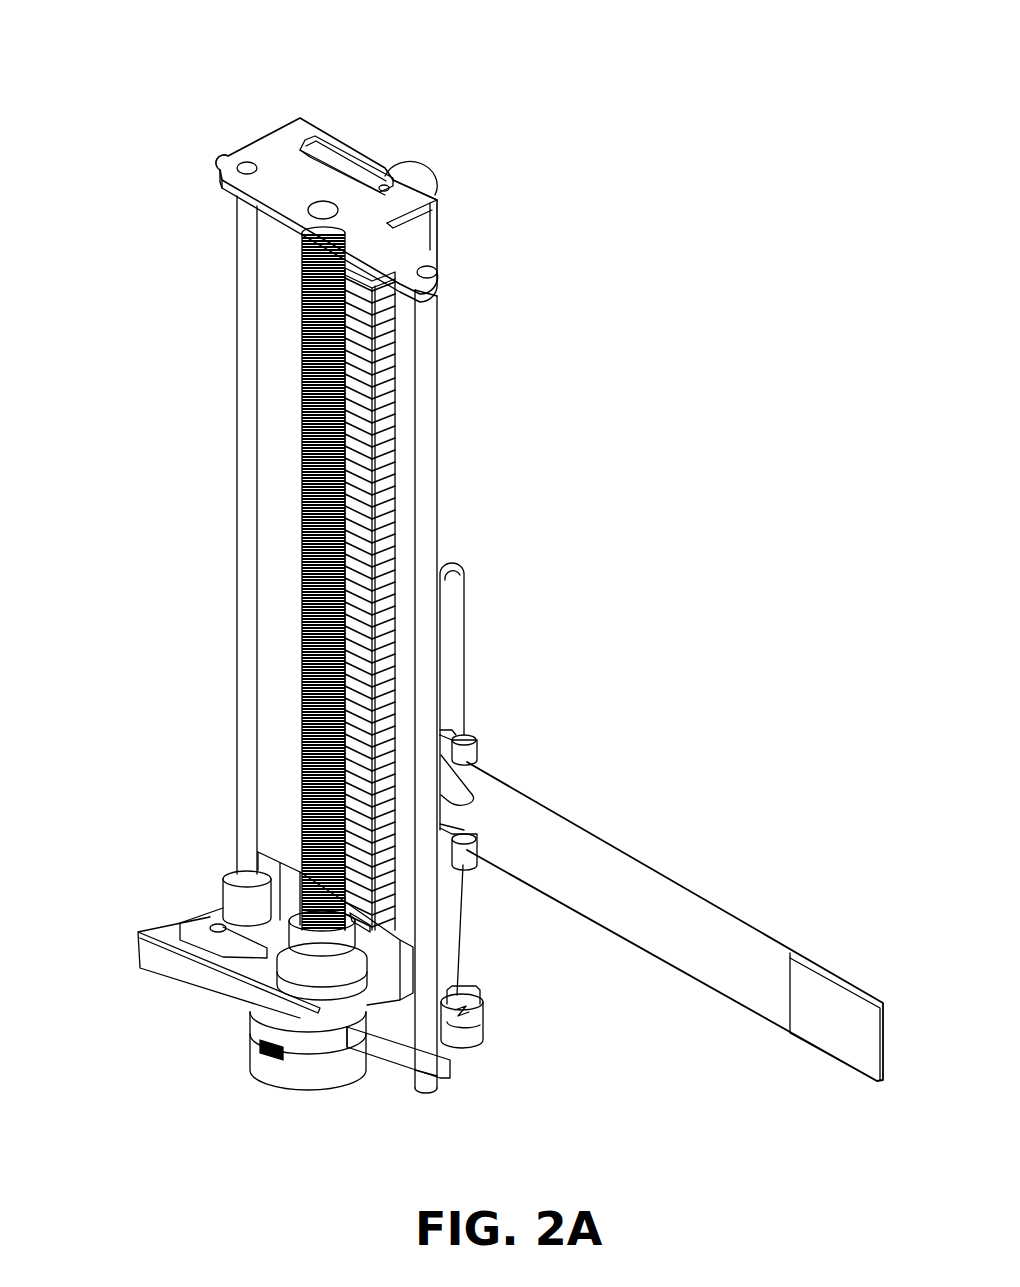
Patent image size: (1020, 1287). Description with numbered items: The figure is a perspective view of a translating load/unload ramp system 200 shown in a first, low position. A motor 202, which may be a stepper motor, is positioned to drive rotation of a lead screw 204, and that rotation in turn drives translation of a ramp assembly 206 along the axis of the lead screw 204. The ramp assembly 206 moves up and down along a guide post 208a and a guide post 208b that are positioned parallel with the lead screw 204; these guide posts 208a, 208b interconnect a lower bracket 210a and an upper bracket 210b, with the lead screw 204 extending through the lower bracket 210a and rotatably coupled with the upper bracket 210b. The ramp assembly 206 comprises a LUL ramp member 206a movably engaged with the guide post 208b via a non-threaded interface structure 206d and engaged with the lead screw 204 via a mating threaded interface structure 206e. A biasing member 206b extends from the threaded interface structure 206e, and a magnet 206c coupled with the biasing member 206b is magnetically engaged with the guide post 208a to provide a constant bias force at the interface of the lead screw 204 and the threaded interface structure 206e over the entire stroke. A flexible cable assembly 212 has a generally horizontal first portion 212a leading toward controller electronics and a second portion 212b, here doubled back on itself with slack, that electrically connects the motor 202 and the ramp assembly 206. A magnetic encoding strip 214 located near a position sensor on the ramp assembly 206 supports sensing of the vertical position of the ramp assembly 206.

The ramp system 200 is at (209, 64).
The motor 202 is at (286, 1086).
The lead screw 204 is at (305, 306).
The ramp assembly 206 is at (160, 930).
The LUL ramp member 206a is at (185, 970).
The biasing member 206b is at (391, 1003).
The magnet 206c is at (478, 1016).
The non-threaded interface structure 206d is at (231, 898).
The threaded interface structure 206e is at (305, 960).
The guide post 208a is at (428, 358).
The guide post 208b is at (244, 526).
The lower bracket 210a is at (449, 1083).
The upper bracket 210b is at (294, 133).
The flexible cable assembly 212 is at (562, 814).
The first portion 212a is at (686, 917).
The second portion 212b is at (452, 622).
The magnetic encoding strip 214 is at (384, 498).